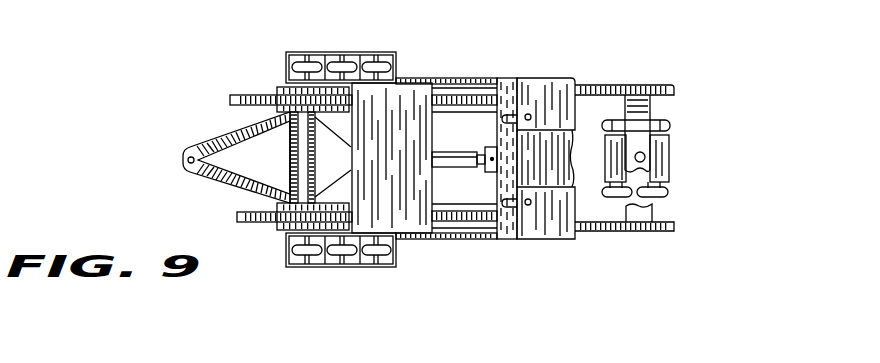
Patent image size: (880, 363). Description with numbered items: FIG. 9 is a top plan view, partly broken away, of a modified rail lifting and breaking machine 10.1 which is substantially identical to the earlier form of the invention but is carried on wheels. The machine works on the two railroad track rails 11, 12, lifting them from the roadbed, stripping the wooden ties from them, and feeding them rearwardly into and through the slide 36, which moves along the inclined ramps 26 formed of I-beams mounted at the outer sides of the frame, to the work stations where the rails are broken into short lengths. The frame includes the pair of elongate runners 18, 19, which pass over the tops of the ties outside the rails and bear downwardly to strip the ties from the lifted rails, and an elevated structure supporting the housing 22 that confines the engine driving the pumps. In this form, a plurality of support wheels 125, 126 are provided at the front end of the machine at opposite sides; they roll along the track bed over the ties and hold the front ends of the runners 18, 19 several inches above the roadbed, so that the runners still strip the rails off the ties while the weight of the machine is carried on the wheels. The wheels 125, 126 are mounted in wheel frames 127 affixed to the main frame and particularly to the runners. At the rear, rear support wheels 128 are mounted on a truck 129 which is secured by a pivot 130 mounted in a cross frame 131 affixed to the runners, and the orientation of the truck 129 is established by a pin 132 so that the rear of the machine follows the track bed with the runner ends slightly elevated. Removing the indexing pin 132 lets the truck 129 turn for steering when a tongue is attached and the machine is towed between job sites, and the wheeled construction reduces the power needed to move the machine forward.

The rail lifting and breaking machine 10.1 is at (498, 74).
The railroad track rail 11 is at (235, 93).
The railroad track rail 12 is at (252, 210).
The runner 18 is at (285, 86).
The runner 19 is at (285, 237).
The housing 22 is at (404, 107).
The inclined ramp 26 is at (466, 239).
The slide 36 is at (548, 239).
The support wheel 125 is at (350, 264).
The support wheel 126 is at (345, 62).
The wheel frame 127 is at (307, 55).
The rear support wheel 128 is at (670, 125).
The truck 129 is at (668, 167).
The pivot 130 is at (642, 152).
The cross frame 131 is at (650, 212).
The pin 132 is at (665, 152).